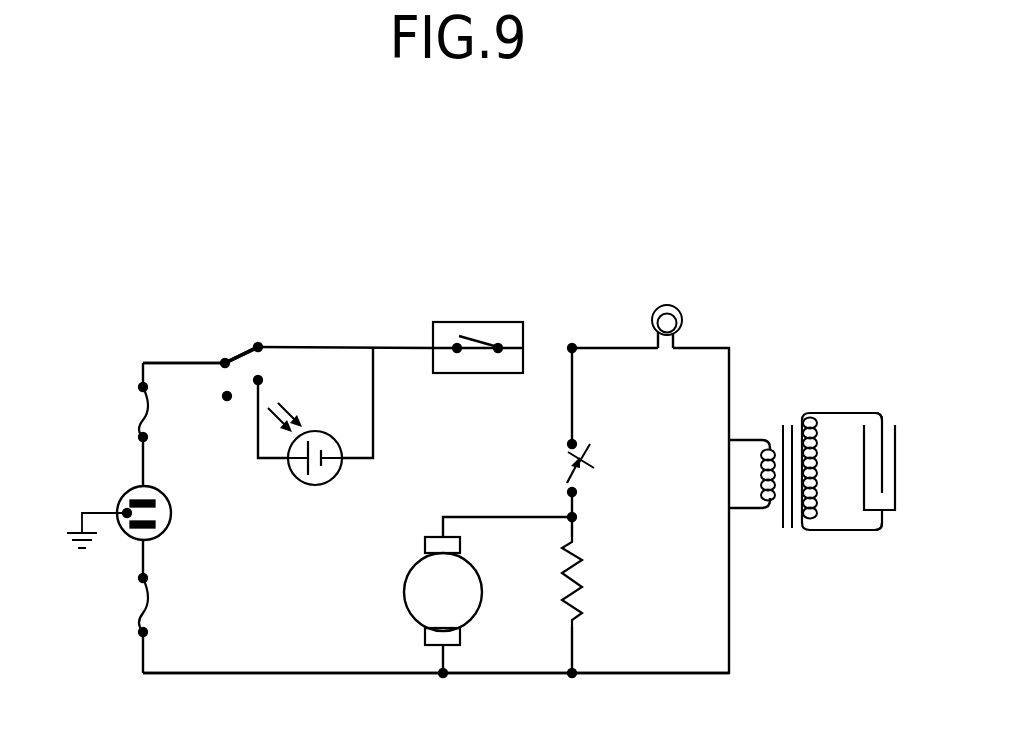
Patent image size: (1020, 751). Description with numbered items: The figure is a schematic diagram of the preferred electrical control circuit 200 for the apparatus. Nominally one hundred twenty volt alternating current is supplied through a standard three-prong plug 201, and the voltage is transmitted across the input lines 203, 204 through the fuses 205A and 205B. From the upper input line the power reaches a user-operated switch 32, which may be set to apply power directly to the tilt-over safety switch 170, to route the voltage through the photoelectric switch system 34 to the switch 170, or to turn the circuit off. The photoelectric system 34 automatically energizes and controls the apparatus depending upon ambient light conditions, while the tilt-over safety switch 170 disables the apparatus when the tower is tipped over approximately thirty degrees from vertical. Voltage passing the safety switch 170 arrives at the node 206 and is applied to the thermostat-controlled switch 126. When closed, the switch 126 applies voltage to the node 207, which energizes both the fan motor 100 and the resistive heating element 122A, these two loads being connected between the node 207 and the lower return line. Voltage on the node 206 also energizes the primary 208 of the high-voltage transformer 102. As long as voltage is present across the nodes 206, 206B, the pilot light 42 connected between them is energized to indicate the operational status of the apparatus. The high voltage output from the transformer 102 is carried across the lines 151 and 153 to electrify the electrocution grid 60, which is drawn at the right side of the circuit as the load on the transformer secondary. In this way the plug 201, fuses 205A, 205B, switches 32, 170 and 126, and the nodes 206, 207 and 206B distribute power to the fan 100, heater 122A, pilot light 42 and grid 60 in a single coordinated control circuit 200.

The switch 32 is at (243, 350).
The photoelectric sensor system 34 is at (332, 478).
The pilot light 42 is at (655, 307).
The electrocution grid 60 is at (876, 388).
The fan 100 is at (428, 574).
The transformer 102 is at (775, 547).
The resistive heating element 122A is at (582, 580).
The thermostat-controlled switch 126 is at (588, 456).
The line 151 is at (853, 412).
The line 153 is at (840, 531).
The tilt-over safety switch 170 is at (483, 321).
The electrical control circuit 200 is at (330, 308).
The three-prong plug 201 is at (172, 513).
The input line 203 is at (200, 674).
The input line 204 is at (170, 362).
The fuse 205A is at (140, 412).
The fuse 205B is at (140, 602).
The node 206 is at (570, 344).
The node 206B is at (578, 670).
The node 207 is at (578, 492).
The primary 208 is at (758, 452).